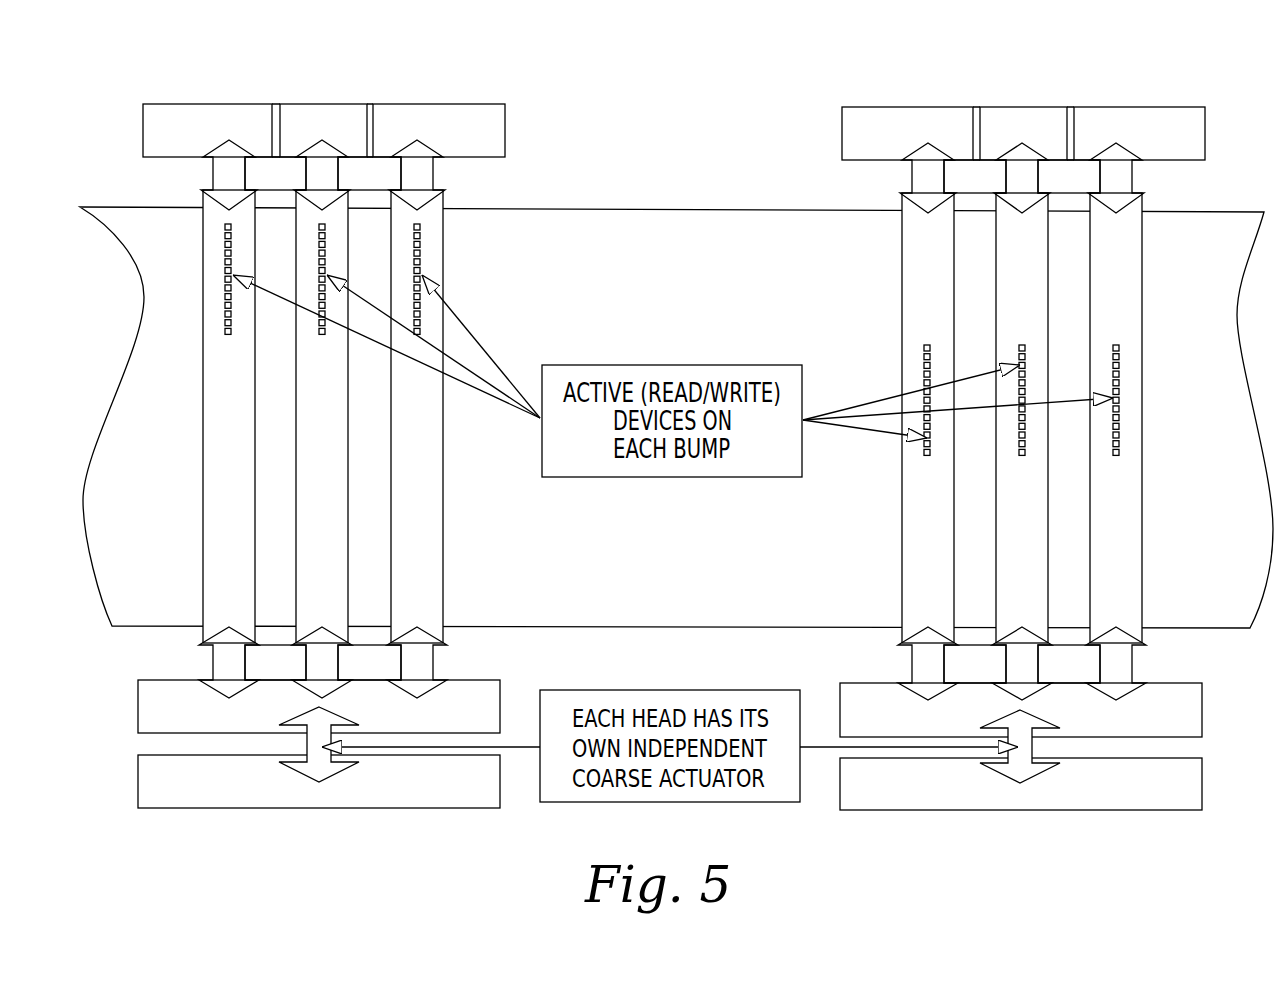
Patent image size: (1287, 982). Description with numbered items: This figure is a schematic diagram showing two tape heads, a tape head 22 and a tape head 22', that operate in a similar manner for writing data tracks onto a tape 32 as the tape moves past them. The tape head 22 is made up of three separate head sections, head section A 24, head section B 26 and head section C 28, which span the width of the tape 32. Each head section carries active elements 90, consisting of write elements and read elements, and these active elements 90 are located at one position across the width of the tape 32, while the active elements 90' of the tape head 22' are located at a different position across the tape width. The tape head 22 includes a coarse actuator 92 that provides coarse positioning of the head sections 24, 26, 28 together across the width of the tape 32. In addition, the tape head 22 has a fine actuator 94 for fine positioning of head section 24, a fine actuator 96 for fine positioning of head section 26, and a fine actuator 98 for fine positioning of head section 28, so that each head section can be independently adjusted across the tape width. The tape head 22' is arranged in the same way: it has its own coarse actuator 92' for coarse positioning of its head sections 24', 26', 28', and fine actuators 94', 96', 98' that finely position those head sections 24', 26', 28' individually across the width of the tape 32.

The tape head 22 is at (321, 429).
The tape head 22' is at (1013, 432).
The head section A 24 is at (229, 419).
The head section B 26 is at (322, 419).
The head section C 28 is at (417, 419).
The head section 24' is at (928, 421).
The head section 26' is at (1022, 421).
The head section 28' is at (1116, 421).
The tape 32 is at (660, 552).
The active elements 90 is at (364, 278).
The active elements 90' is at (1064, 400).
The coarse actuator 92 is at (319, 765).
The coarse actuator 92' is at (1028, 767).
The fine actuator 94 is at (207, 109).
The fine actuator 96 is at (323, 109).
The fine actuator 98 is at (439, 109).
The fine actuator 94' is at (918, 112).
The fine actuator 96' is at (1047, 112).
The fine actuator 98' is at (1156, 112).